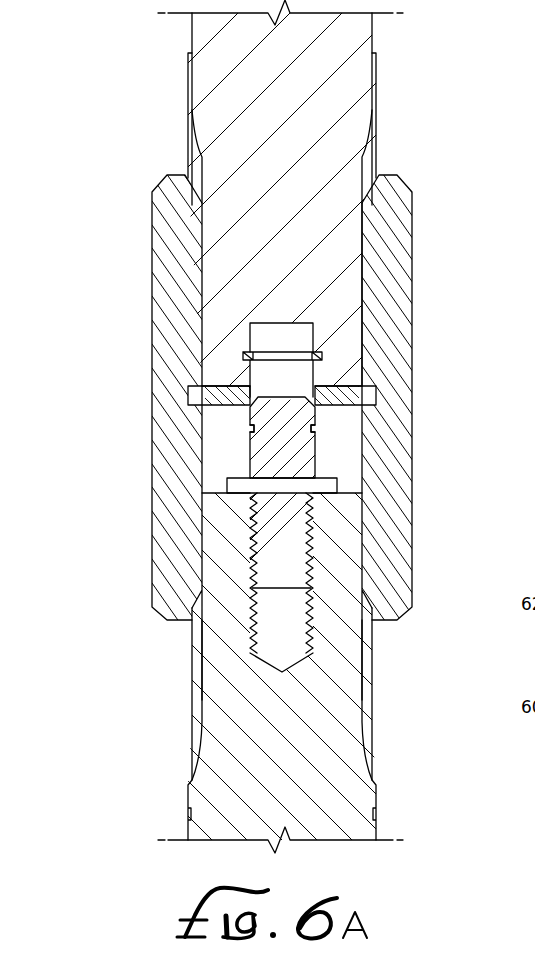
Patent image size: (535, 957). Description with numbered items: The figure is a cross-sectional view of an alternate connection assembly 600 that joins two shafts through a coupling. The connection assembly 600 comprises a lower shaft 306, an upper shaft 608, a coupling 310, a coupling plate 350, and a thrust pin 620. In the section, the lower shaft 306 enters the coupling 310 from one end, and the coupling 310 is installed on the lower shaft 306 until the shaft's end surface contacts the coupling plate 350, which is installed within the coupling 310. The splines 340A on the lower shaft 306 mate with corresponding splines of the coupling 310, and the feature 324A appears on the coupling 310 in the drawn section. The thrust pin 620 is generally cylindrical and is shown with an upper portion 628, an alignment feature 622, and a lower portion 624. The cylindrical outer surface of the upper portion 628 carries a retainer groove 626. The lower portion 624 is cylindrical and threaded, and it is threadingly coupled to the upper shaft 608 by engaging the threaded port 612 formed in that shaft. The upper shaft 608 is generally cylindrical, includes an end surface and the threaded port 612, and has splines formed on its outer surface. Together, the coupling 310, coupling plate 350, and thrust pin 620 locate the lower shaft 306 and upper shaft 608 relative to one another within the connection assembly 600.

The lower shaft 306 is at (240, 90).
The splines 340A is at (190, 147).
The coupling 310 is at (175, 287).
The housing bore wall 324A is at (376, 255).
The connection assembly 600 is at (118, 335).
The coupling plate 350 is at (230, 400).
The upper portion 628 is at (250, 450).
The retainer groove 626 is at (310, 428).
The thrust pin 620 is at (290, 453).
The alignment feature 622 is at (327, 482).
The lower portion 624 is at (313, 547).
The threaded port 612 is at (323, 637).
The upper shaft 608 is at (243, 708).